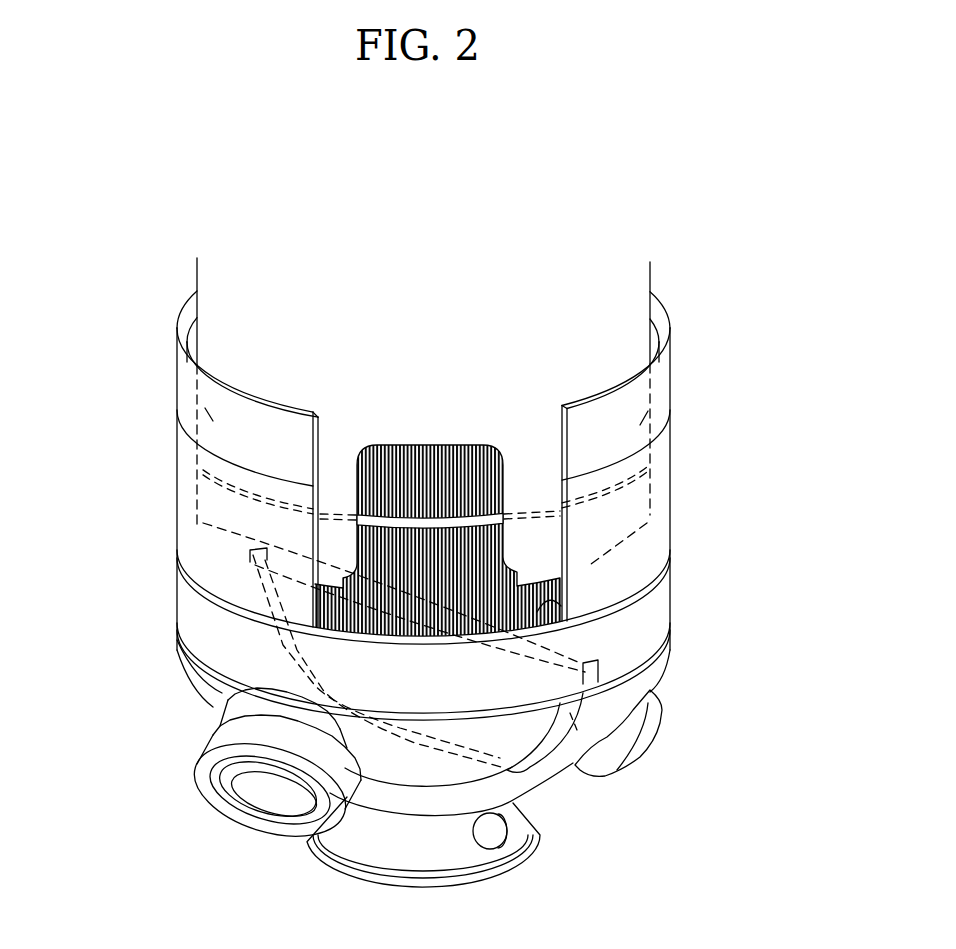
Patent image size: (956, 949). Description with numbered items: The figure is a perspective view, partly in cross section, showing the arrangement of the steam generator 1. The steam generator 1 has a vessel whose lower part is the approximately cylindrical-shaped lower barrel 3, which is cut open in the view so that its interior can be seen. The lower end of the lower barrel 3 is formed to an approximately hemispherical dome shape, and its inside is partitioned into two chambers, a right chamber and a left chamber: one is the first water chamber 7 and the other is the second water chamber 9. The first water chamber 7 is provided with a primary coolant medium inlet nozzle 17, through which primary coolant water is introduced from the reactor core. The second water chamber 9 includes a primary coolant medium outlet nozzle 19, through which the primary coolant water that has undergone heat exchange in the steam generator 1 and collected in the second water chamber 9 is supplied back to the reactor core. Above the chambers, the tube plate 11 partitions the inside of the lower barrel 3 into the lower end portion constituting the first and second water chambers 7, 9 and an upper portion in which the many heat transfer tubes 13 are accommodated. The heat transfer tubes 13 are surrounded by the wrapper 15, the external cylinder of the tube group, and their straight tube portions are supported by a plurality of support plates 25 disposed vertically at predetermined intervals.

The steam generator 1 is at (740, 218).
The lower barrel 3 is at (666, 453).
The first water chamber 7 is at (640, 593).
The second water chamber 9 is at (218, 620).
The tube plate 11 is at (543, 608).
The heat transfer tubes 13 is at (476, 553).
The wrapper 15 is at (628, 283).
The primary coolant medium inlet nozzle 17 is at (648, 732).
The primary coolant medium outlet nozzle 19 is at (213, 742).
The support plates 25 is at (478, 516).